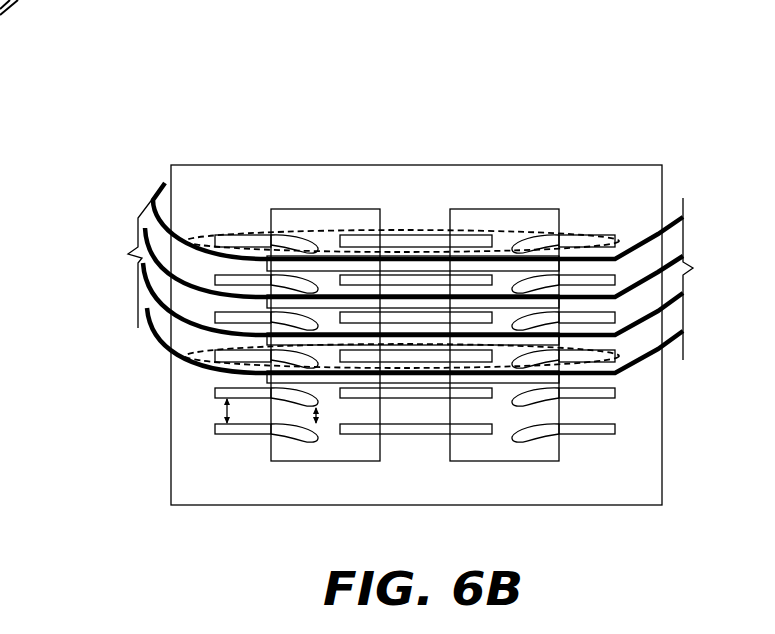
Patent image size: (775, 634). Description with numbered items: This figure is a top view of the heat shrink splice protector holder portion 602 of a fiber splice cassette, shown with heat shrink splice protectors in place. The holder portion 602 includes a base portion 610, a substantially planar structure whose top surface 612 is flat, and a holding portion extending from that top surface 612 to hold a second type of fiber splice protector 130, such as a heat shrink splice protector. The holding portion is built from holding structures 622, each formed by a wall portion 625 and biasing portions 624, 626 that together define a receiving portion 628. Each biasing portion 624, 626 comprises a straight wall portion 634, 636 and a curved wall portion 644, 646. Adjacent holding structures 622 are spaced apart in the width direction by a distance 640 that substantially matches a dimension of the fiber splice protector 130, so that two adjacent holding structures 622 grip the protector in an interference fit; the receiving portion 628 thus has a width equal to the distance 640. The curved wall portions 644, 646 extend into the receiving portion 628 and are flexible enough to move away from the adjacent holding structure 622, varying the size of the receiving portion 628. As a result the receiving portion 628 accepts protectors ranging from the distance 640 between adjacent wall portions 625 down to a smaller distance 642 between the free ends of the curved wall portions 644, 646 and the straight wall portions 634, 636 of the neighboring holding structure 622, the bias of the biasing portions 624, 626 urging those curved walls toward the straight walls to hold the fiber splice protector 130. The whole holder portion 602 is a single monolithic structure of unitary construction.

The heat shrink splice protector holder portion 602 is at (553, 88).
The base portion 610 is at (220, 505).
The top surface 612 is at (637, 235).
The holding structure 622 is at (236, 233).
The biasing portion 624 is at (248, 240).
The wall portion 625 is at (362, 247).
The biasing portion 626 is at (577, 240).
The receiving portion 628 is at (58, 11).
The fiber splice protector 130 is at (427, 257).
The straight wall portion 634 is at (222, 282).
The straight wall portion 636 is at (598, 278).
The curved wall portion 644 is at (290, 318).
The curved wall portion 646 is at (527, 283).
The distance 640 is at (222, 412).
The distance 642 is at (318, 418).